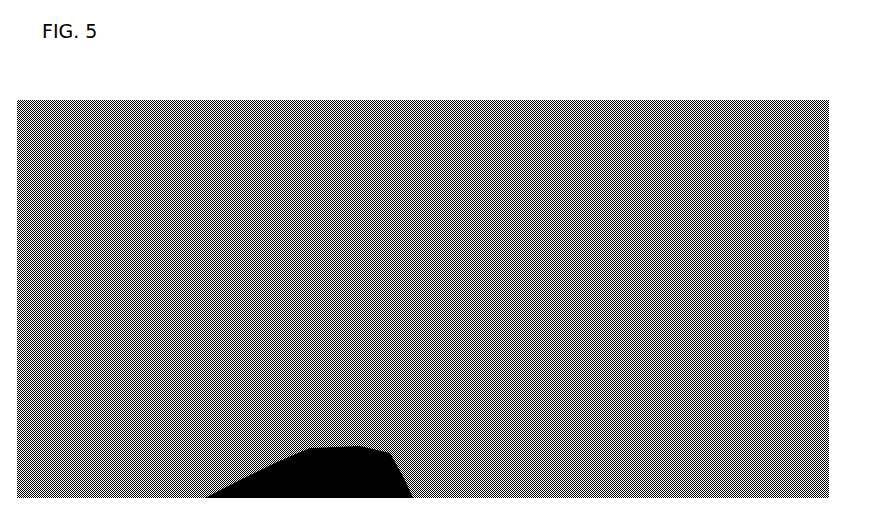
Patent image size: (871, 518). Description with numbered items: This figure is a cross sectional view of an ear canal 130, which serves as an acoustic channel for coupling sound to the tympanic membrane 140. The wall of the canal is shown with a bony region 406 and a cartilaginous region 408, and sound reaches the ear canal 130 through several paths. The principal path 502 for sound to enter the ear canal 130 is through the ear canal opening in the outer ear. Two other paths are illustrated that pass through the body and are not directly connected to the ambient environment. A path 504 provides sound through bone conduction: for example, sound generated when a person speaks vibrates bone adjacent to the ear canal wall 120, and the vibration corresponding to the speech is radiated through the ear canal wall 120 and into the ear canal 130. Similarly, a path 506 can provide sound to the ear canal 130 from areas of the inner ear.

The path 504 is at (281, 120).
The bony region 406 is at (469, 142).
The cartilaginous region 408 is at (600, 204).
The tympanic membrane 140 is at (170, 240).
The ear canal 130 is at (410, 238).
The ear canal wall 120 is at (484, 195).
The path 506 is at (103, 262).
The principal path 502 is at (590, 304).